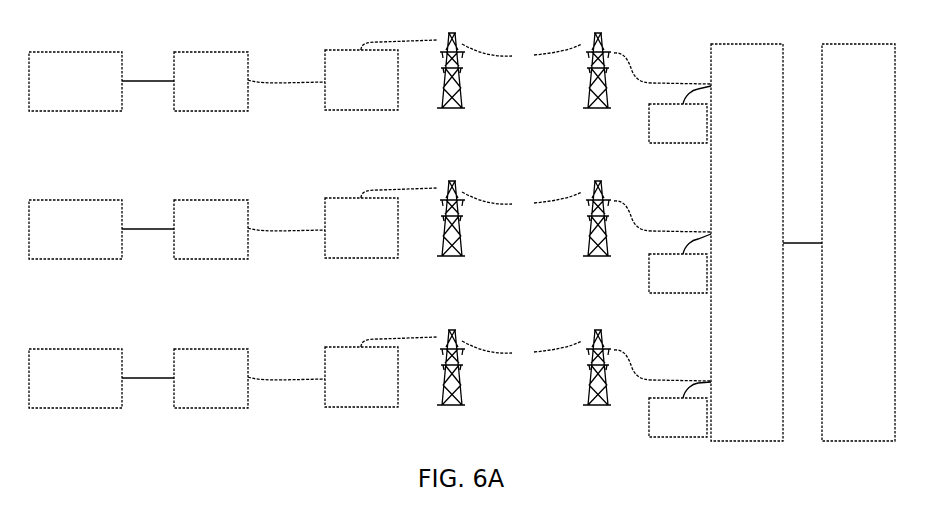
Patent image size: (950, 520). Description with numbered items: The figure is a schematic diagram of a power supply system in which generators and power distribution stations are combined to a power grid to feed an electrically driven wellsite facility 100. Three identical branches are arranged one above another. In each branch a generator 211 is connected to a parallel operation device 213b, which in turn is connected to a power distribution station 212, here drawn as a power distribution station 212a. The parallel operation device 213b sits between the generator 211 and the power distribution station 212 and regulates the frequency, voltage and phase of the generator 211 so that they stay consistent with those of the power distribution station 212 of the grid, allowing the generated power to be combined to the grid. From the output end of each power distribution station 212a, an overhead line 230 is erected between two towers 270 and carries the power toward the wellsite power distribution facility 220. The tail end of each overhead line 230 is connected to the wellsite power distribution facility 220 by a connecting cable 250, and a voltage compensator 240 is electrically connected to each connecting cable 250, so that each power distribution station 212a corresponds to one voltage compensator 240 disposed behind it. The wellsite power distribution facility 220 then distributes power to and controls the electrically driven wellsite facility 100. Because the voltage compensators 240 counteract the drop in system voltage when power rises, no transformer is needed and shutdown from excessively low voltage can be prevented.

The electrically driven wellsite facility 100 is at (858, 242).
The generator 211 is at (75, 230).
The power distribution station 212 is at (361, 238).
The power distribution station 212a is at (361, 228).
The parallel operation device 213b is at (211, 230).
The wellsite power distribution facility 220 is at (747, 242).
The overhead line 230 is at (522, 201).
The voltage compensator 240 is at (680, 261).
The connecting cable 250 is at (662, 217).
The tower 270 is at (524, 219).